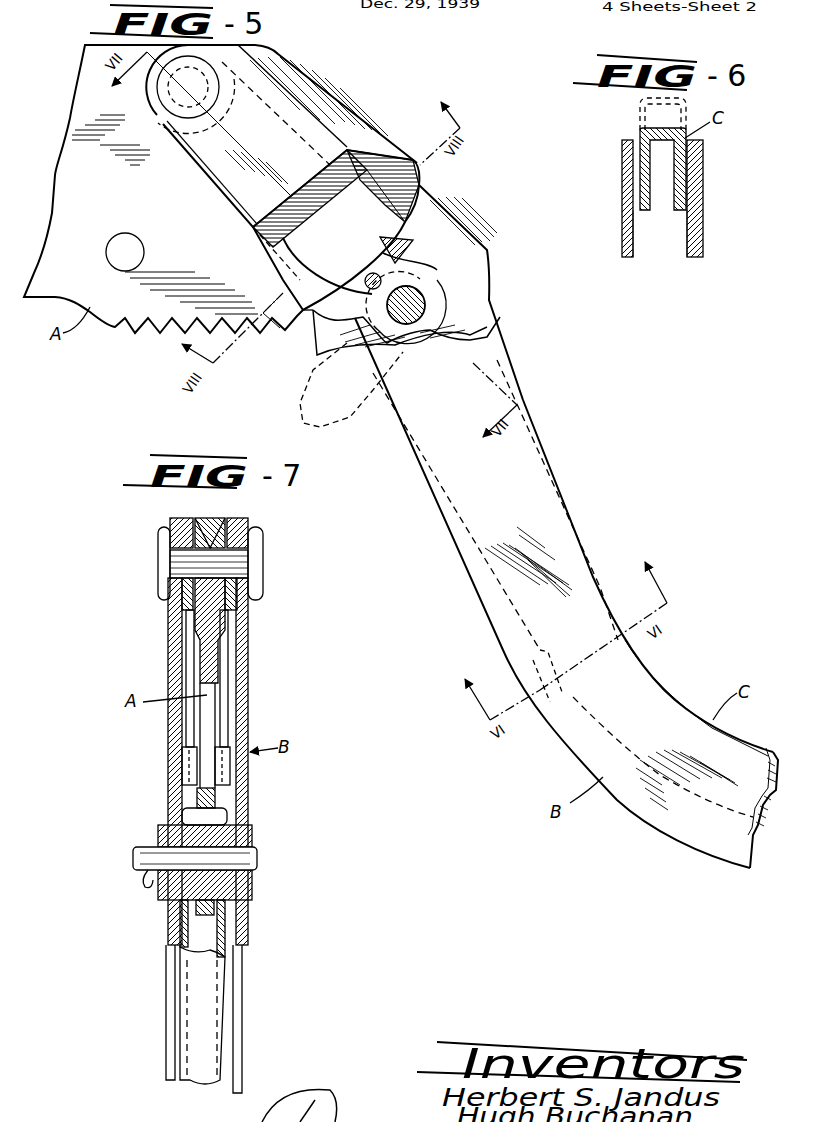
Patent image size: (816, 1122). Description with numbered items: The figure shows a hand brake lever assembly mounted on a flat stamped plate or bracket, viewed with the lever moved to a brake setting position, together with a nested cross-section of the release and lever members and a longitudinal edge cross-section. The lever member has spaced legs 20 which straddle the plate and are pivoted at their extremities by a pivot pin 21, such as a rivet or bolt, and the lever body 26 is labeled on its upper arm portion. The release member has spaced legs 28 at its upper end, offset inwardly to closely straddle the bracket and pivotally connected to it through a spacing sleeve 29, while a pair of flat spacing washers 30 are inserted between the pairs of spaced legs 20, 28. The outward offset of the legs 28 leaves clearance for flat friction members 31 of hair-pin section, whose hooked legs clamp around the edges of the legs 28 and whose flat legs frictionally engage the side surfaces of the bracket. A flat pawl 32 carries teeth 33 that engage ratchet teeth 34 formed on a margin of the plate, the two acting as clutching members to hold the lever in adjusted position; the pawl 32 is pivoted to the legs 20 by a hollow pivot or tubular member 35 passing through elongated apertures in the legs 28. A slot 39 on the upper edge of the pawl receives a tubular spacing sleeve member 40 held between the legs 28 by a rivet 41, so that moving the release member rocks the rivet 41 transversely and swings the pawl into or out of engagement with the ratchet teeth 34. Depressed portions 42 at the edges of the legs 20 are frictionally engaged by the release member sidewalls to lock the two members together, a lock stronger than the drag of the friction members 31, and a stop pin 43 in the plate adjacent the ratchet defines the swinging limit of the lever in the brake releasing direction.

In FIG. 6, the spaced legs 20 is at (723, 158).
In FIG. 7, the spaced legs 20 is at (272, 660).
In FIG. 5, the pivot pin 21 is at (158, 104).
In FIG. 7, the pivot pin 21 is at (263, 562).
In FIG. 5, the arm member 26 is at (330, 118).
In FIG. 7, the spaced legs 28 is at (227, 718).
In FIG. 7, the spacing sleeve 29 is at (210, 530).
In FIG. 7, the flat spacing washers 30 is at (247, 517).
In FIG. 5, the flat friction members 31 is at (392, 177).
In FIG. 7, the flat friction members 31 is at (228, 777).
In FIG. 5, the flat pawl 32 is at (318, 342).
In FIG. 7, the flat pawl 32 is at (215, 905).
In FIG. 5, the teeth 33 is at (295, 332).
In FIG. 5, the ratchet teeth 34 is at (265, 328).
In FIG. 5, the hollow pivot or tubular member 35 is at (415, 287).
In FIG. 7, the hollow pivot or tubular member 35 is at (250, 852).
In FIG. 7, the slot 39 is at (175, 838).
In FIG. 7, the tubular spacing sleeve member 40 is at (222, 802).
In FIG. 7, the rivet 41 is at (193, 812).
In FIG. 5, the depressed portions 42 is at (547, 708).
In FIG. 6, the depressed portions 42 is at (685, 243).
In FIG. 5, the stop pin 43 is at (143, 245).